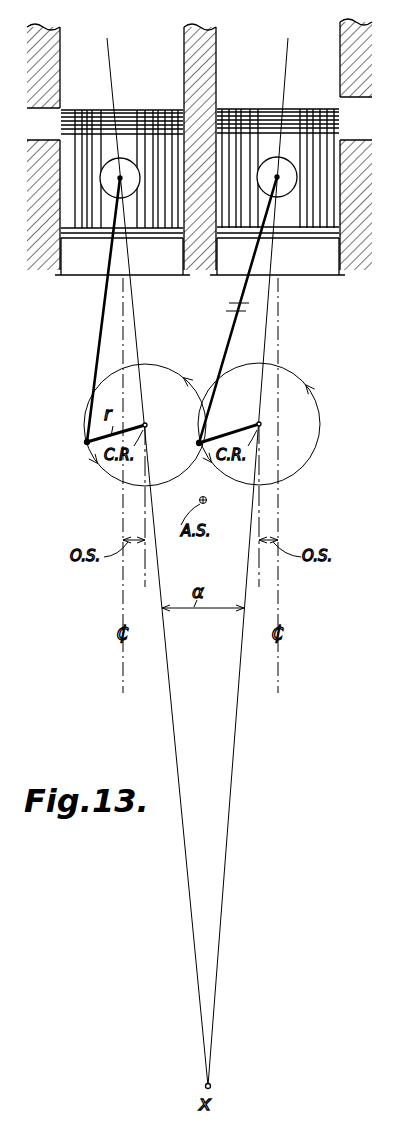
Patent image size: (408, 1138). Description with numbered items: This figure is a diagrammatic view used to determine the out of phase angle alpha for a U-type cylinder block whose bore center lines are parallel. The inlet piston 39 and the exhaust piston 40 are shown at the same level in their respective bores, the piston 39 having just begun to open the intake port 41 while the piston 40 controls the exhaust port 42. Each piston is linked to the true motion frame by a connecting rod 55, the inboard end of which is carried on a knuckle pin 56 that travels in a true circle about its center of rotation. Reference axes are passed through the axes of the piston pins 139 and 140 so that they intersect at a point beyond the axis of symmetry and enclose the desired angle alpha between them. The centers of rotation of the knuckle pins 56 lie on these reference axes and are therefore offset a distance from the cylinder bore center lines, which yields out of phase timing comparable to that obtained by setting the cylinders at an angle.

The piston 39 is at (78, 185).
The piston 40 is at (325, 180).
The intake valve port 41 is at (58, 104).
The exhaust port 42 is at (350, 100).
The piston pin 139 is at (116, 190).
The piston pin 140 is at (282, 189).
The connecting rod 55 is at (101, 324).
The knuckle pin 56 is at (87, 442).